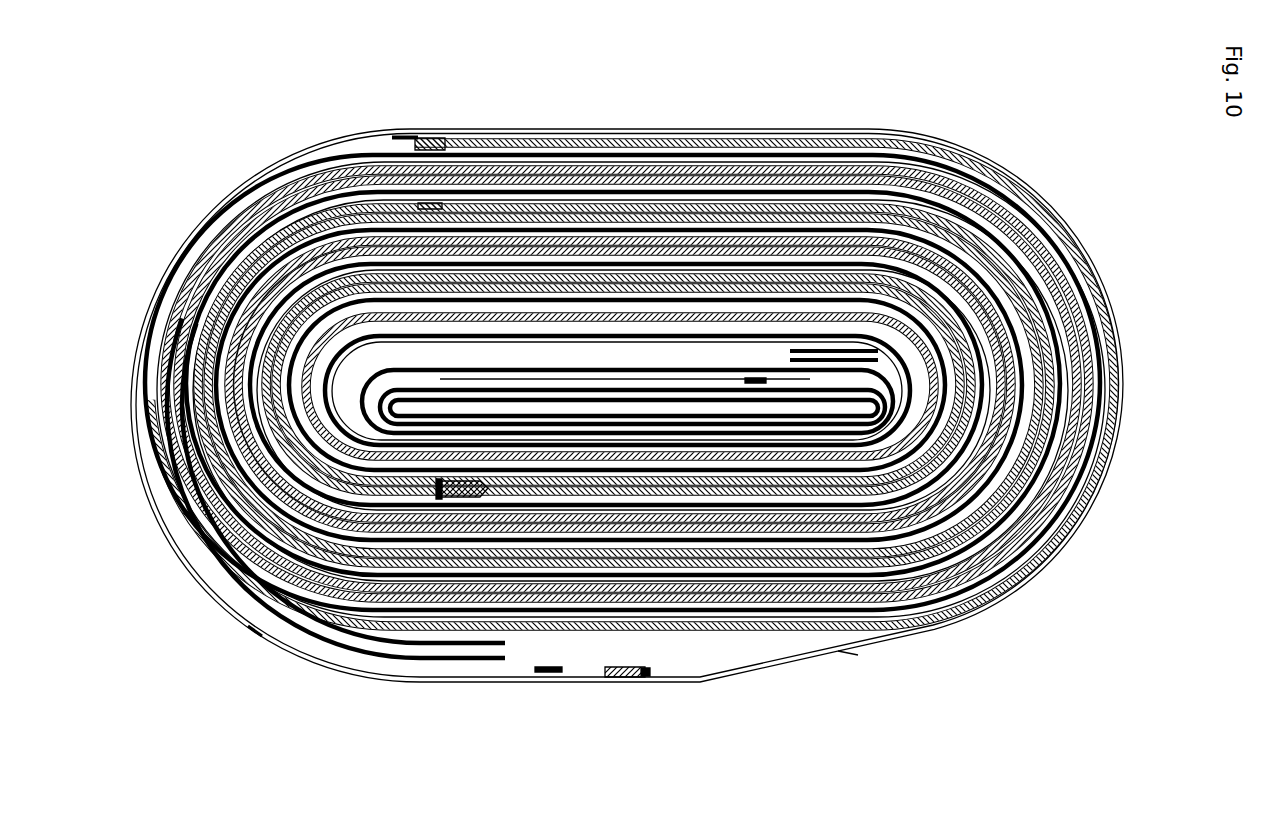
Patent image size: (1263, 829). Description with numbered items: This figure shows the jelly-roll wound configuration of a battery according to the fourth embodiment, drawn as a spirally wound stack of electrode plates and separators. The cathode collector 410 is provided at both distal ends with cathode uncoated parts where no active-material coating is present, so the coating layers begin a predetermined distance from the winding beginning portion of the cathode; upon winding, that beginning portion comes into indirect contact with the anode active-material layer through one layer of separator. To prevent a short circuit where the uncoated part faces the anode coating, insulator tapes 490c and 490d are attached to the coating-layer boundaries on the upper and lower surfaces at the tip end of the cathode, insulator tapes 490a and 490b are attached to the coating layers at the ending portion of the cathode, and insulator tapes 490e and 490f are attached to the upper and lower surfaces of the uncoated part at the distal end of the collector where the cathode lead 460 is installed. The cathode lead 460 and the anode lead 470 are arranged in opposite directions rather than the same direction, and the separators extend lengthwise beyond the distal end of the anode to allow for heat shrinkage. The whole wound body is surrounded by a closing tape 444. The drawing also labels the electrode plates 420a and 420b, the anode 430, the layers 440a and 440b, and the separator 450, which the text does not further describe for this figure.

The cathode collector 410 is at (629, 412).
The first electrode plate 420a is at (762, 207).
The second electrode plate 420b is at (727, 207).
The case 430 is at (669, 434).
The first case layer 440a is at (1120, 335).
The second case layer 440b is at (1125, 374).
The closing tape 444 is at (848, 656).
The separator end 450 is at (455, 662).
The cathode lead 460 is at (549, 674).
The anode lead 470 is at (748, 382).
The insulator tape 490a is at (300, 200).
The insulator tape 490b is at (368, 146).
The insulator tape 490c is at (260, 631).
The insulator tape 490d is at (440, 488).
The insulator tape 490e is at (648, 672).
The insulator tape 490f is at (619, 680).